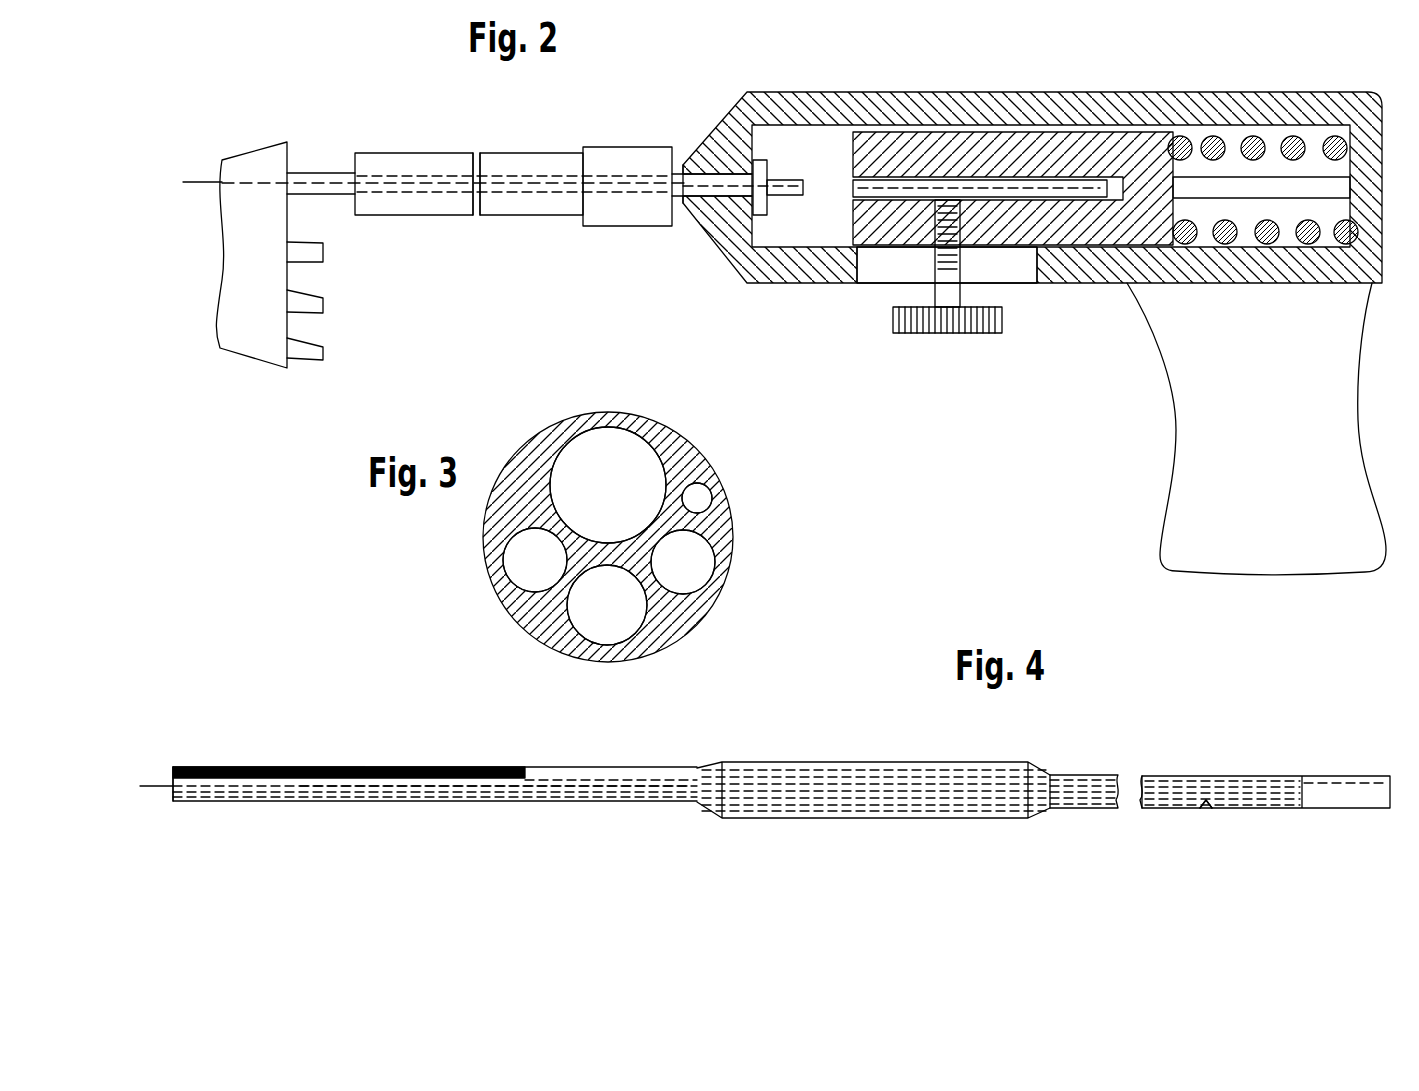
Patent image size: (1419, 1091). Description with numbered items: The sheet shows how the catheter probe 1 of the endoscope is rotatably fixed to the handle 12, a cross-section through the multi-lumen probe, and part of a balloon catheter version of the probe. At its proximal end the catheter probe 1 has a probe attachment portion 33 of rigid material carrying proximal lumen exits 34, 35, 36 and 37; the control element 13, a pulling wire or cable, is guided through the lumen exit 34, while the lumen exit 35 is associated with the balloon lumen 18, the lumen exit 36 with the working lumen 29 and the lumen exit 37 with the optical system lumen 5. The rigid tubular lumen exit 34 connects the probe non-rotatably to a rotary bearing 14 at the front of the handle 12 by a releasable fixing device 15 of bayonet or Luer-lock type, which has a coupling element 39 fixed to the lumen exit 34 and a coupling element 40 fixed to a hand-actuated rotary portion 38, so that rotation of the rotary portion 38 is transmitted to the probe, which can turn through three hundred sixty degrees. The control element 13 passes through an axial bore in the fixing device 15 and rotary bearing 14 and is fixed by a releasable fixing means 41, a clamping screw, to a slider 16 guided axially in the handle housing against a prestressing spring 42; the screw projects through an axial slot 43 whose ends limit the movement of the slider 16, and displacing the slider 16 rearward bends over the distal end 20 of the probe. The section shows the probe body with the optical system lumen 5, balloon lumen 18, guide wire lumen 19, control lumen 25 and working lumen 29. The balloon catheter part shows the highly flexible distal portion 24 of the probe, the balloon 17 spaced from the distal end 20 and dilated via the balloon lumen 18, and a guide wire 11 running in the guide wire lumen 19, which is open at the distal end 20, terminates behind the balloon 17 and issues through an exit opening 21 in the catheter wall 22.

In FIG. 3, the catheter probe 1 is at (480, 526).
In FIG. 4, the catheter probe 1 is at (1080, 774).
In FIG. 3, the optical system lumen 5 is at (640, 452).
In FIG. 4, the guide wire 11 is at (150, 786).
In FIG. 2, the handle 12 is at (1066, 382).
In FIG. 2, the control element 13 is at (193, 181).
In FIG. 2, the rotary bearing 14 is at (712, 208).
In FIG. 2, the releasable fixing device 15 is at (476, 226).
In FIG. 2, the slider 16 is at (1125, 145).
In FIG. 4, the balloon 17 is at (855, 765).
In FIG. 3, the balloon lumen 18 is at (700, 498).
In FIG. 3, the guide wire lumen 19 is at (695, 562).
In FIG. 4, the guide wire lumen 19 is at (565, 798).
In FIG. 4, the distal end of the probe 20 is at (173, 800).
In FIG. 4, the exit opening 21 is at (1208, 805).
In FIG. 4, the catheter wall 22 is at (1150, 806).
In FIG. 4, the distal portion of the probe 24 is at (177, 746).
In FIG. 3, the control lumen 25 is at (520, 566).
In FIG. 3, the working lumen 29 is at (625, 615).
In FIG. 2, the probe attachment portion 33 is at (230, 312).
In FIG. 2, the lumen exit 34 is at (322, 173).
In FIG. 2, the lumen exit 35 is at (323, 252).
In FIG. 2, the lumen exit 36 is at (323, 306).
In FIG. 2, the lumen exit 37 is at (323, 353).
In FIG. 2, the rotary portion 38 is at (625, 152).
In FIG. 2, the coupling element 39 is at (412, 160).
In FIG. 2, the coupling element 40 is at (523, 206).
In FIG. 2, the releasable fixing means 41 is at (962, 262).
In FIG. 2, the prestressing spring 42 is at (1303, 142).
In FIG. 2, the slot 43 is at (885, 270).